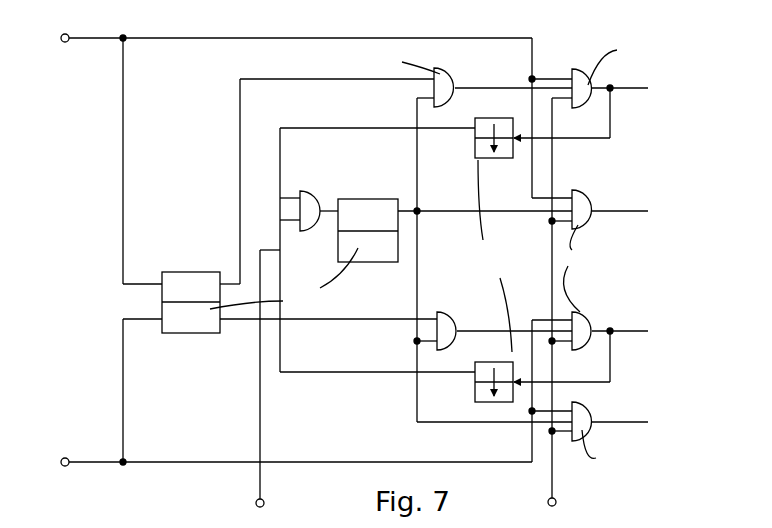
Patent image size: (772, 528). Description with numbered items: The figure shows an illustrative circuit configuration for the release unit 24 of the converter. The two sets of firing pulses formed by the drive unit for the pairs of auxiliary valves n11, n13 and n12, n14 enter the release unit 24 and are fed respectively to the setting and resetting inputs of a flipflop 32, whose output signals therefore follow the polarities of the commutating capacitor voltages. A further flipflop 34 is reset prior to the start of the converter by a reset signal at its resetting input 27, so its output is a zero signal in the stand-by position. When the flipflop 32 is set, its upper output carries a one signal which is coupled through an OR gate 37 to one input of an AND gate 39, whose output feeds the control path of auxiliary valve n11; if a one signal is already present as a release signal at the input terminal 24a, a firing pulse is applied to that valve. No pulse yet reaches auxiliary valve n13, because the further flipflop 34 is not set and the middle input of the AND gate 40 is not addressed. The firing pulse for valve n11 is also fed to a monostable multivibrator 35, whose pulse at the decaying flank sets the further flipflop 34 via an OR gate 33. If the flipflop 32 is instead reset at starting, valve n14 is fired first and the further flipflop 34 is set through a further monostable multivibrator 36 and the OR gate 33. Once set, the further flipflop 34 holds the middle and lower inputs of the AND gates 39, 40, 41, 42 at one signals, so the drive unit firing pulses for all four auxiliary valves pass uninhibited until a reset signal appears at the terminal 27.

The release unit 24 is at (183, 157).
The input terminal 24a is at (557, 503).
The resetting input 27 is at (255, 503).
The flipflop 32 is at (189, 272).
The OR gate 33 is at (305, 191).
The further flipflop 34 is at (368, 199).
The monostable multivibrator 35 is at (496, 118).
The further monostable multivibrator 36 is at (511, 362).
The OR gate 37 is at (444, 72).
The AND gate 39 is at (592, 90).
The AND gate 40 is at (588, 192).
The AND gate 41 is at (585, 312).
The AND gate 42 is at (588, 407).